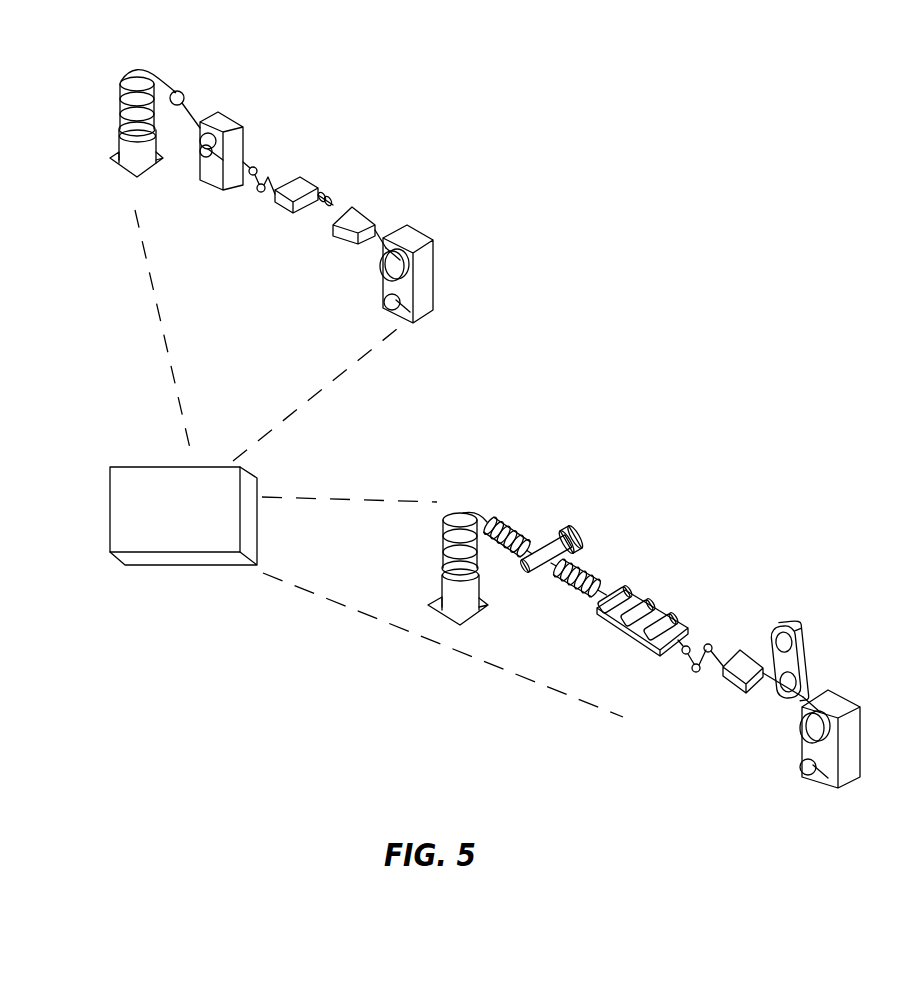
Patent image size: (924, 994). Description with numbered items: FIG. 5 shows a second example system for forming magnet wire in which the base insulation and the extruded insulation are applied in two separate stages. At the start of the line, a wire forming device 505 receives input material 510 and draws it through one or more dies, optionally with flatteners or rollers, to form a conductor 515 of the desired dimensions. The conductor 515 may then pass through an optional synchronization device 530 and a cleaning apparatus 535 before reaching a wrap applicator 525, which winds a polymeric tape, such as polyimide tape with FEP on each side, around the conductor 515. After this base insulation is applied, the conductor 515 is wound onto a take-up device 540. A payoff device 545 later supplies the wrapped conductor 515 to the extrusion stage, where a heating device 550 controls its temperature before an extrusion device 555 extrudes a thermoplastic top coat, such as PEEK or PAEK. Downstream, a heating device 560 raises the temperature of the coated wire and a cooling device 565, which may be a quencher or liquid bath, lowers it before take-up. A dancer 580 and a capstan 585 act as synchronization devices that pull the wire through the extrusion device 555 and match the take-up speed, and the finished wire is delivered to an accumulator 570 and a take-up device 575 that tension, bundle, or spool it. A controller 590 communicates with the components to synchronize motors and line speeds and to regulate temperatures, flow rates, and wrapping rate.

The wire forming device 505 is at (227, 124).
The input material 510 is at (189, 106).
The conductor 515 is at (252, 166).
The wrap applicator 525 is at (348, 238).
The synchronization device 530 is at (284, 180).
The cleaning apparatus 535 is at (320, 184).
The take-up device 540 is at (437, 256).
The payoff device 545 is at (428, 596).
The heating device 550 is at (500, 514).
The extrusion device 555 is at (584, 530).
The heating device 560 is at (559, 588).
The cooling device 565 is at (658, 602).
The accumulator 570 is at (792, 628).
The take-up device 575 is at (846, 712).
The dancer 580 is at (705, 647).
The capstan 585 is at (738, 694).
The controller 590 is at (168, 534).